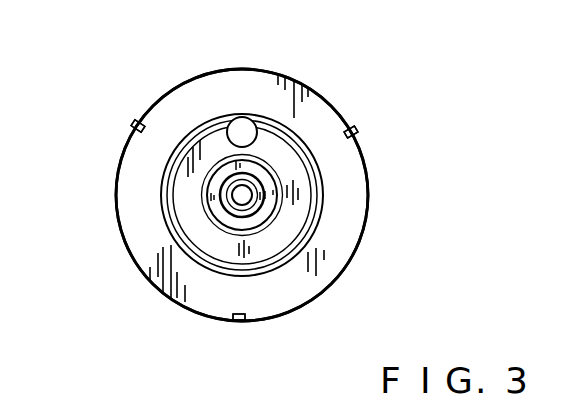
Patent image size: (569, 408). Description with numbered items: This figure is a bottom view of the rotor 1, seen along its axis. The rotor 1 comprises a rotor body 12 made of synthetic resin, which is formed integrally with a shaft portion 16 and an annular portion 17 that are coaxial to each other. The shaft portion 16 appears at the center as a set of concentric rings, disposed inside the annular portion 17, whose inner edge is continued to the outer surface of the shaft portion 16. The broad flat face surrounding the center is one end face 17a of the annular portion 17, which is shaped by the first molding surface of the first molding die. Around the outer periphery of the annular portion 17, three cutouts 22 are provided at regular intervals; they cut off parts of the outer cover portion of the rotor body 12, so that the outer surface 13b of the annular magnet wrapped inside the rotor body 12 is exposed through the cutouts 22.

The rotor 1 is at (376, 58).
The rotor body 12 is at (380, 172).
The outer surface of the magnet 13b is at (138, 121).
The shaft portion 16 is at (265, 226).
The annular portion 17 is at (368, 205).
The end face of the annular portion 17a is at (268, 288).
The cutouts 22 is at (133, 127).